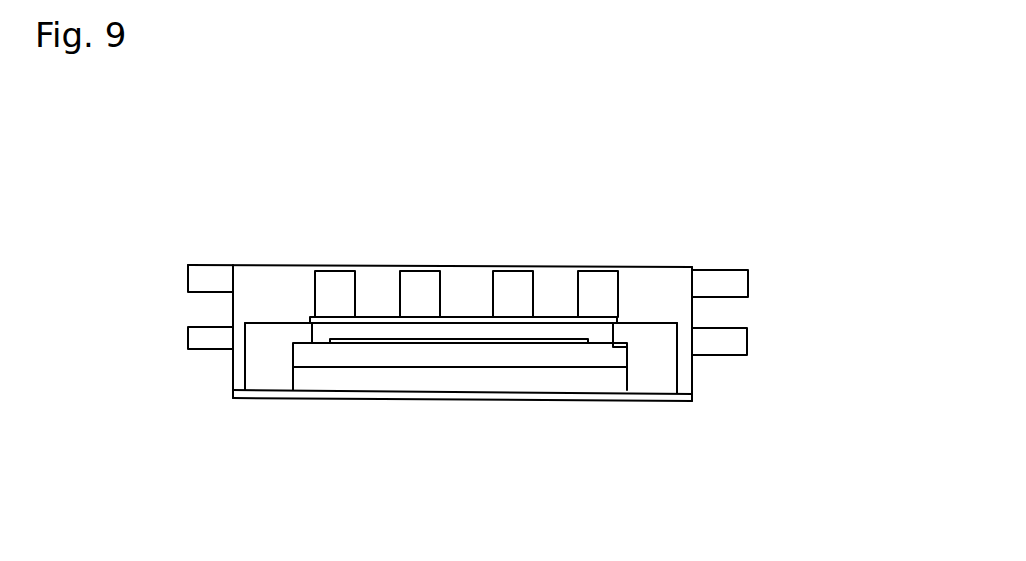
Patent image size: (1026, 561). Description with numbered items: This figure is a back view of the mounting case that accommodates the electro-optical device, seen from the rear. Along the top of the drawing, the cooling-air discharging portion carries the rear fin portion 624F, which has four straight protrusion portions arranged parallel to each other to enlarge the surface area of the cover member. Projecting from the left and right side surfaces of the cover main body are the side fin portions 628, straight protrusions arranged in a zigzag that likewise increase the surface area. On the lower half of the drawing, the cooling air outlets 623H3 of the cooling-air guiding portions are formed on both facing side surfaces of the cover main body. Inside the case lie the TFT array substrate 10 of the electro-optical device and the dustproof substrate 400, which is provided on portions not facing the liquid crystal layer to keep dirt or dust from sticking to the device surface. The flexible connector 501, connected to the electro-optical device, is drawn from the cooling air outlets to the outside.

The side fin portions 628 is at (205, 350).
The rear fin portion 624F is at (600, 280).
The cooling air outlets 623H3 is at (270, 363).
The dustproof substrate 400 is at (550, 380).
The TFT array substrate 10 is at (485, 355).
The flexible connector 501 is at (467, 347).